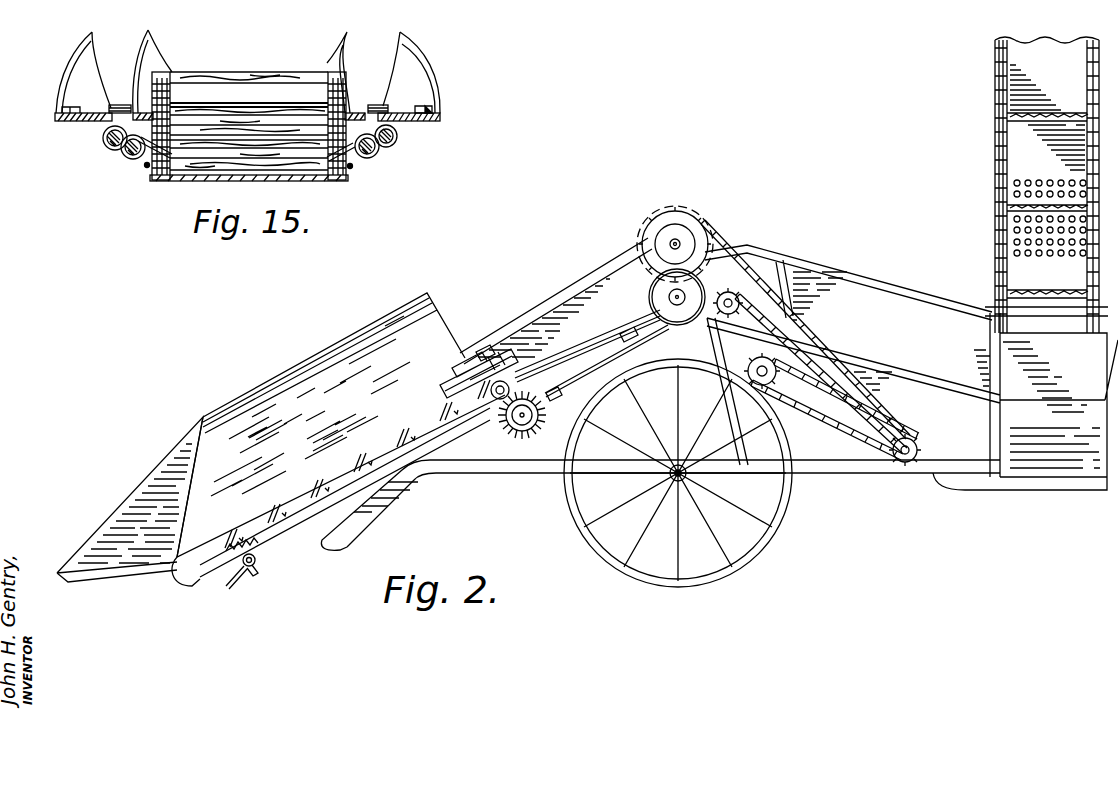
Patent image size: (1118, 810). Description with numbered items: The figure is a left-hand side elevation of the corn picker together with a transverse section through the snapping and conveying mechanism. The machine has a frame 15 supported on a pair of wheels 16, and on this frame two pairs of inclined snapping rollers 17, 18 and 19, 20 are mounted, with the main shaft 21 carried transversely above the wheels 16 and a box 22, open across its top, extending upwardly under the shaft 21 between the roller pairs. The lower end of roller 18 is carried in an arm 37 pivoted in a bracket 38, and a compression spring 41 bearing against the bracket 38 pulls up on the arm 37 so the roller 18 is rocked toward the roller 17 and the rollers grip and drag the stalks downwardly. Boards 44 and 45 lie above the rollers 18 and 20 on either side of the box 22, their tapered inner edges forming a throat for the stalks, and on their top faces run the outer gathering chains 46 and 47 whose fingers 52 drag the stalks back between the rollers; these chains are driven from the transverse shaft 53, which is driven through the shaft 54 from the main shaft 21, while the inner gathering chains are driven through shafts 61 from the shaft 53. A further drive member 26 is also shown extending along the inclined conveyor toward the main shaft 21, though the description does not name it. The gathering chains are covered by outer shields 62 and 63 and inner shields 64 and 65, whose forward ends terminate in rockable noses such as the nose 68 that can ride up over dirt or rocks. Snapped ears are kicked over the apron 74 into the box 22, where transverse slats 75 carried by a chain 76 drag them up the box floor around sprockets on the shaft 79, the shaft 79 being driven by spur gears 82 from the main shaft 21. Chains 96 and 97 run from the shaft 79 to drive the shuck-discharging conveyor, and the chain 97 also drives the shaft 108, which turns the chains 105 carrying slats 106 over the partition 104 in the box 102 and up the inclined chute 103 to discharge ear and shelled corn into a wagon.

In FIG. 2, the frame 15 is at (530, 474).
In FIG. 2, the wheels 16 is at (778, 517).
In FIG. 15, the snapping roller 17 is at (129, 160).
In FIG. 15, the snapping roller 18 is at (112, 151).
In FIG. 15, the snapping roller 19 is at (378, 152).
In FIG. 15, the snapping roller 20 is at (397, 141).
In FIG. 2, the snapping roller 20 is at (303, 512).
In FIG. 2, the main shaft 21 is at (684, 305).
In FIG. 15, the box 22 is at (330, 182).
In FIG. 2, the box 22 is at (567, 308).
In FIG. 2, the drive shaft 26 is at (583, 352).
In FIG. 2, the arm 37 is at (258, 563).
In FIG. 2, the bracket 38 is at (236, 582).
In FIG. 2, the compression spring 41 is at (231, 547).
In FIG. 15, the board 44 is at (95, 122).
In FIG. 15, the board 45 is at (418, 122).
In FIG. 15, the outer gathering chain 46 is at (78, 107).
In FIG. 15, the outer gathering chain 47 is at (396, 110).
In FIG. 2, the outer gathering chain 47 is at (470, 360).
In FIG. 15, the fingers 52 is at (122, 105).
In FIG. 2, the transverse shaft 53 is at (518, 429).
In FIG. 2, the shaft 54 is at (578, 376).
In FIG. 15, the shafts 61 is at (147, 168).
In FIG. 15, the outer shield 62 is at (70, 69).
In FIG. 15, the outer shield 63 is at (431, 65).
In FIG. 2, the outer shield 63 is at (293, 380).
In FIG. 15, the inner shield 64 is at (153, 57).
In FIG. 15, the inner shield 65 is at (350, 55).
In FIG. 2, the nose 68 is at (147, 477).
In FIG. 15, the apron 74 is at (352, 155).
In FIG. 15, the transverse slats 75 is at (243, 74).
In FIG. 15, the chain 76 is at (170, 123).
In FIG. 15, the shaft 79 is at (220, 98).
In FIG. 2, the shaft 79 is at (673, 243).
In FIG. 2, the spur gears 82 is at (708, 232).
In FIG. 2, the chain 96 is at (812, 418).
In FIG. 2, the chain 97 is at (813, 346).
In FIG. 2, the box 102 is at (1047, 445).
In FIG. 2, the chute 103 is at (1003, 178).
In FIG. 2, the partition 104 is at (1030, 160).
In FIG. 2, the chains 105 is at (1003, 143).
In FIG. 2, the slats 106 is at (1030, 126).
In FIG. 2, the shaft 108 is at (981, 458).